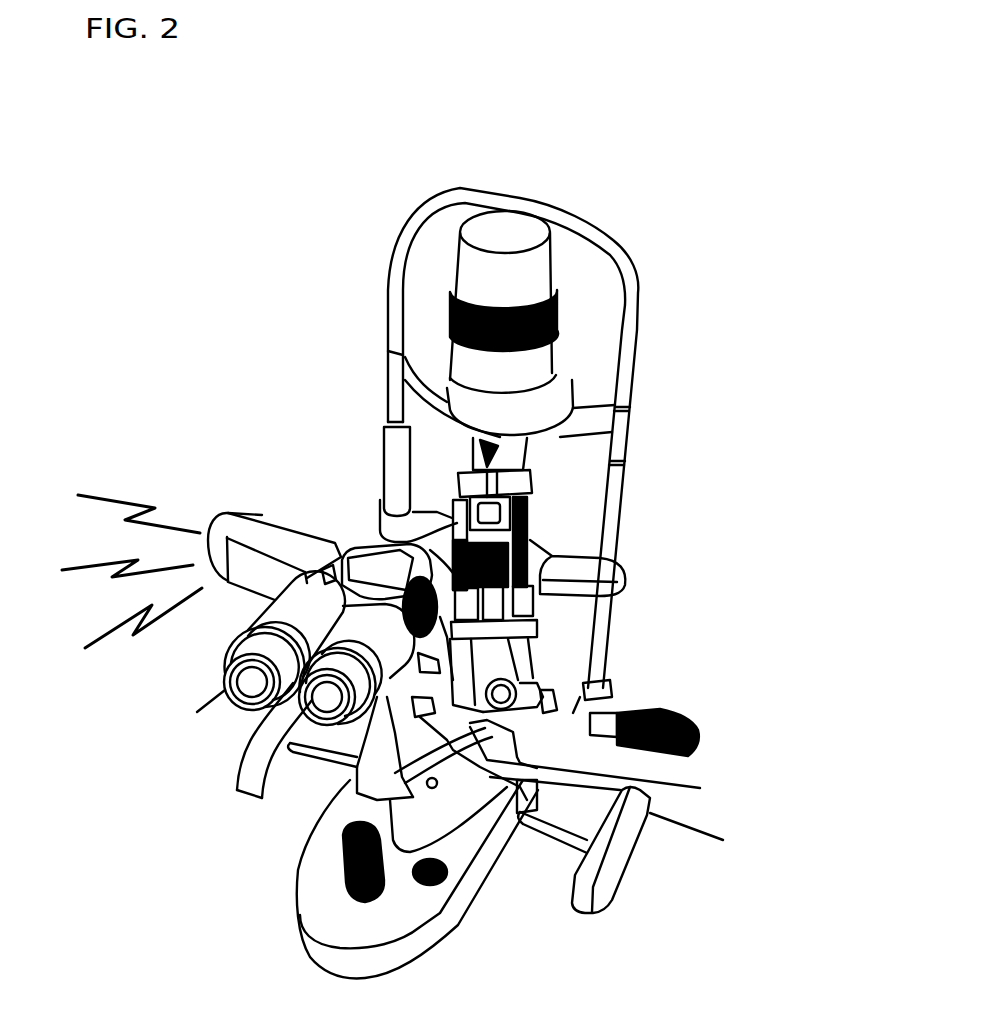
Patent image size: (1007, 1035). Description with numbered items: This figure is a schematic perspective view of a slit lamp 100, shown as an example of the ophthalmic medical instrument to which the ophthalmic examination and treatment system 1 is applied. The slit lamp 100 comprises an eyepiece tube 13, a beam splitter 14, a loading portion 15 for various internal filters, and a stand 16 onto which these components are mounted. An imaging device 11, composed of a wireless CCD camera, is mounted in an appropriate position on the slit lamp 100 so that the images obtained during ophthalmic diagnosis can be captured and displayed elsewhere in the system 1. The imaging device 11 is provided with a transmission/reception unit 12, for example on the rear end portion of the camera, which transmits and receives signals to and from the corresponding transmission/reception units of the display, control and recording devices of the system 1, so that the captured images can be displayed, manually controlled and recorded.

The ophthalmic examination and treatment system 1 is at (318, 340).
The imaging device 11 is at (275, 538).
The transmission/reception unit 12 is at (222, 522).
The eyepiece tube 13 is at (228, 692).
The beam splitter 14 is at (700, 788).
The loading portion 15 is at (540, 270).
The stand 16 is at (613, 517).
The slit lamp 100 is at (562, 610).